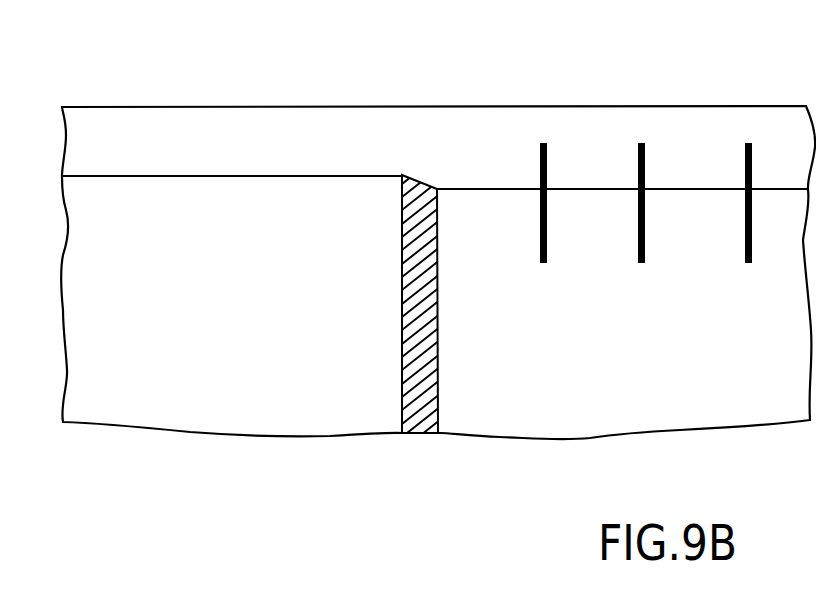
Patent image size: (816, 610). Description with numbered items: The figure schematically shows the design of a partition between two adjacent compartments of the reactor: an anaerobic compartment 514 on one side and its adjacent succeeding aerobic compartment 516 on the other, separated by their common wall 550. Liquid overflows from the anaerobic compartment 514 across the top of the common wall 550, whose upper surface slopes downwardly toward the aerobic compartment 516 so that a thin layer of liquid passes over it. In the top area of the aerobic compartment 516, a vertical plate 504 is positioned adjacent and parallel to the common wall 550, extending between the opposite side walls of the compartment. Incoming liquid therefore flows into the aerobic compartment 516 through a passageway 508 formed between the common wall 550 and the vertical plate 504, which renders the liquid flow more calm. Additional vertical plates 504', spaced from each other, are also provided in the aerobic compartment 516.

The vertical plate 504 is at (568, 145).
The additional vertical plates 504' is at (691, 145).
The passageway 508 is at (500, 213).
The anaerobic compartment 514 is at (265, 313).
The aerobic compartment 516 is at (665, 372).
The common wall 550 is at (418, 362).